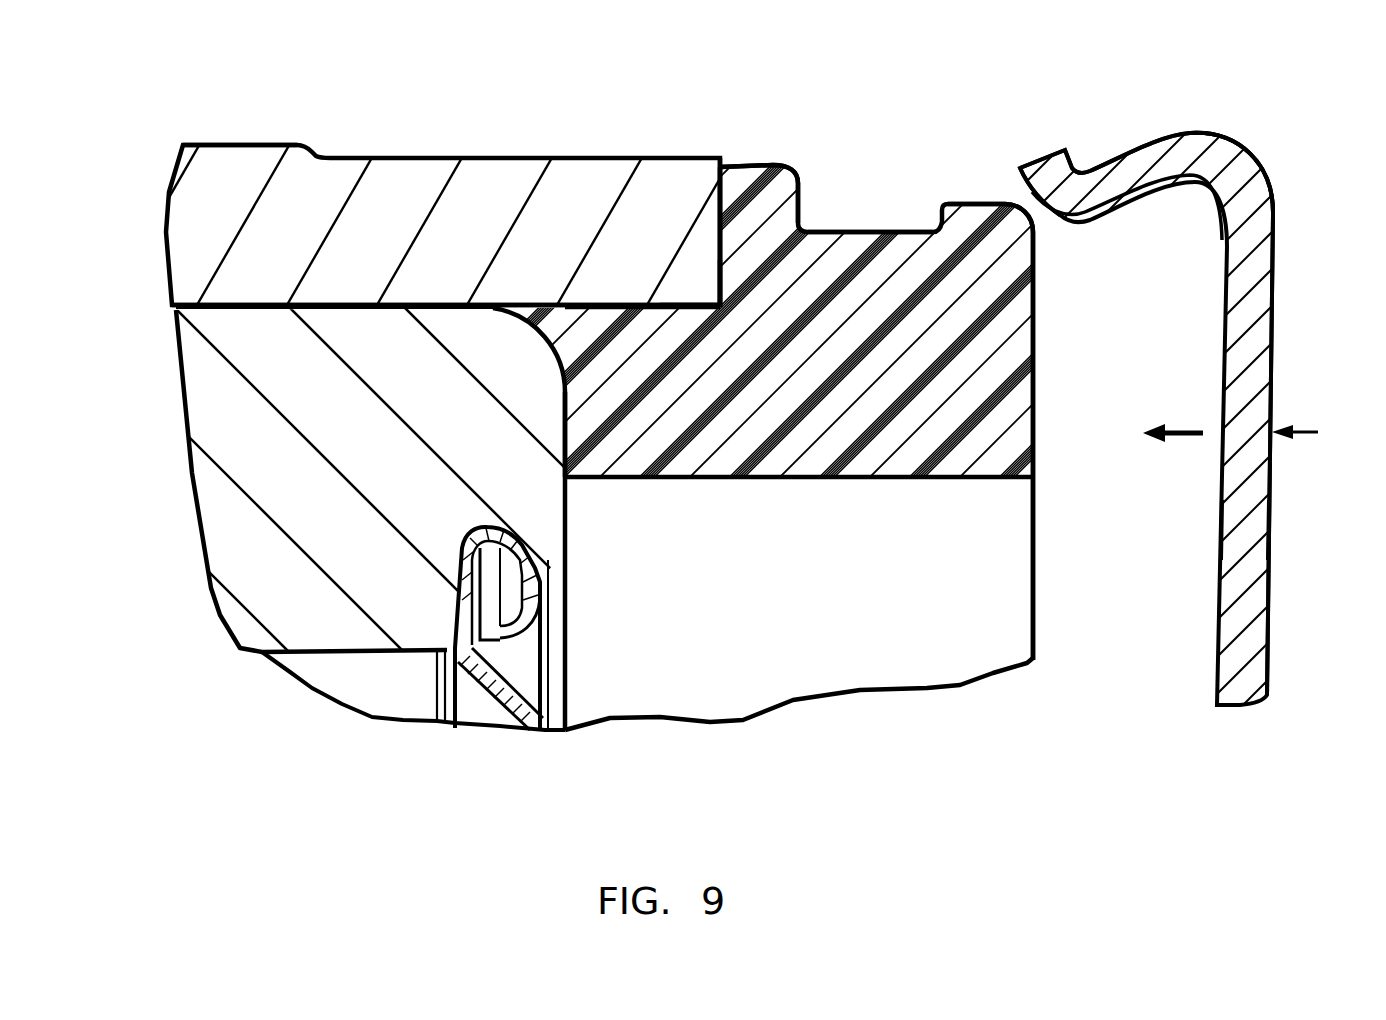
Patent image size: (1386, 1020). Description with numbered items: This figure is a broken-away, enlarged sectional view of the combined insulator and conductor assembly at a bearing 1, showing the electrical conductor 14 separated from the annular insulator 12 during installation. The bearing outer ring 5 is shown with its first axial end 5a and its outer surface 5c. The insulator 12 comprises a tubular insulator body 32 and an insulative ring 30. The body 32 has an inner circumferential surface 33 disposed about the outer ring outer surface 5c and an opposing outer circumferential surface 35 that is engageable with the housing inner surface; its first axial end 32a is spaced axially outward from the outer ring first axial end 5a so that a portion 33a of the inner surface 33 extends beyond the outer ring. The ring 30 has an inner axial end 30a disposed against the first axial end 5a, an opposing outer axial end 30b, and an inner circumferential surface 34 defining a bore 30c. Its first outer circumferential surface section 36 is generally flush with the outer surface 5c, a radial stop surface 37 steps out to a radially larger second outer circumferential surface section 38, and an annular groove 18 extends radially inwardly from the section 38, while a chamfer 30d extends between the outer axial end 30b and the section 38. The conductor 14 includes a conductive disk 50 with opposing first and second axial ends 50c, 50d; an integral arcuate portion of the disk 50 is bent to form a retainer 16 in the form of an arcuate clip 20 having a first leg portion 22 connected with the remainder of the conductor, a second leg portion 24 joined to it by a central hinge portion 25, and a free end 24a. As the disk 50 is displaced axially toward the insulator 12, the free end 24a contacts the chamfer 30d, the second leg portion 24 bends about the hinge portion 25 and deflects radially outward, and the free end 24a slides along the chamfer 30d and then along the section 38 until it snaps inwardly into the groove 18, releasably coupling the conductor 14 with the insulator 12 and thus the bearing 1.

The bearing 1 is at (640, 620).
The outer ring 5 is at (203, 478).
The first axial end 5a is at (565, 520).
The outer surface 5c is at (358, 303).
The annular insulator 12 is at (602, 62).
The electrical conductor 14 is at (1315, 312).
The retainer 16 is at (1079, 105).
The annular groove 18 is at (856, 228).
The arcuate clip 20 is at (1155, 128).
The first leg portion 22 is at (1265, 222).
The second leg portion 24 is at (1117, 168).
The free end 24a is at (1003, 165).
The central hinge portion 25 is at (1222, 160).
The insulative ring 30 is at (826, 98).
The inner axial end 30a is at (564, 395).
The outer axial end 30b is at (1035, 386).
The bore 30c is at (980, 565).
The chamfer 30d is at (1024, 215).
The tubular insulator body 32 is at (477, 102).
The first axial end 32a is at (752, 164).
The inner circumferential surface 33 is at (341, 312).
The inner surface portion 33a is at (655, 305).
The inner circumferential surface 34 is at (802, 480).
The outer circumferential surface 35 is at (252, 143).
The first outer circumferential surface section 36 is at (631, 272).
The radial stop surface 37 is at (718, 202).
The second outer circumferential surface section 38 is at (962, 203).
The conductive disk 50 is at (1316, 432).
The first axial end 50c is at (1268, 528).
The second axial end 50d is at (1222, 528).